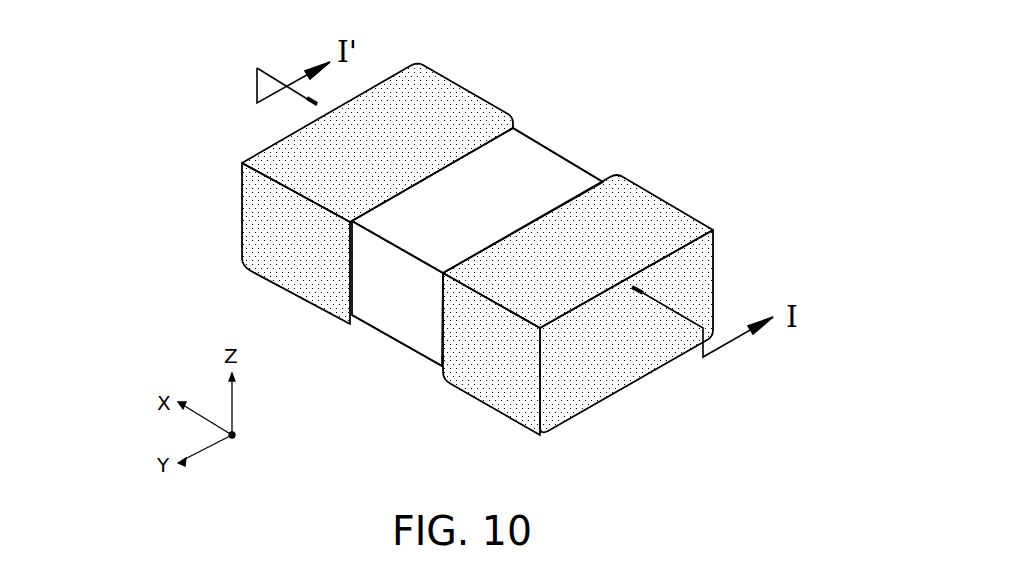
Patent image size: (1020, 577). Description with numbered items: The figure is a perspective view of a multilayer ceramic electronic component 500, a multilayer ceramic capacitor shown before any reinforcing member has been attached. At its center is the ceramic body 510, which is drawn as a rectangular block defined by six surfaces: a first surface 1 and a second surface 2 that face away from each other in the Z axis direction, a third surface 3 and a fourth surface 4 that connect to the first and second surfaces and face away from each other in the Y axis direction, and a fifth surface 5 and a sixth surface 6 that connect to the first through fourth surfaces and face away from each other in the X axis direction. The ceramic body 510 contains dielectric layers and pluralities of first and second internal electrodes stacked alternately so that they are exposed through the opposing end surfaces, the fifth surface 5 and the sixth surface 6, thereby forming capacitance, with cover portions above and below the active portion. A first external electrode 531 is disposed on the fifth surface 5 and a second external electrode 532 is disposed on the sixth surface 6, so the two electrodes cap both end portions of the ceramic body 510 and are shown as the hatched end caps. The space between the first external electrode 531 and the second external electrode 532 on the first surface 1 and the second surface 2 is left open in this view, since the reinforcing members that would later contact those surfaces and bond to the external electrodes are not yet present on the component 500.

The multilayer ceramic electronic component 500 is at (446, 251).
The ceramic body 510 is at (466, 242).
The first external electrode 531 is at (580, 312).
The second external electrode 532 is at (344, 175).
The first surface 1 is at (497, 193).
The second surface 2 is at (418, 313).
The third surface 3 is at (580, 168).
The fourth surface 4 is at (398, 300).
The fifth surface 5 is at (593, 364).
The sixth surface 6 is at (297, 233).